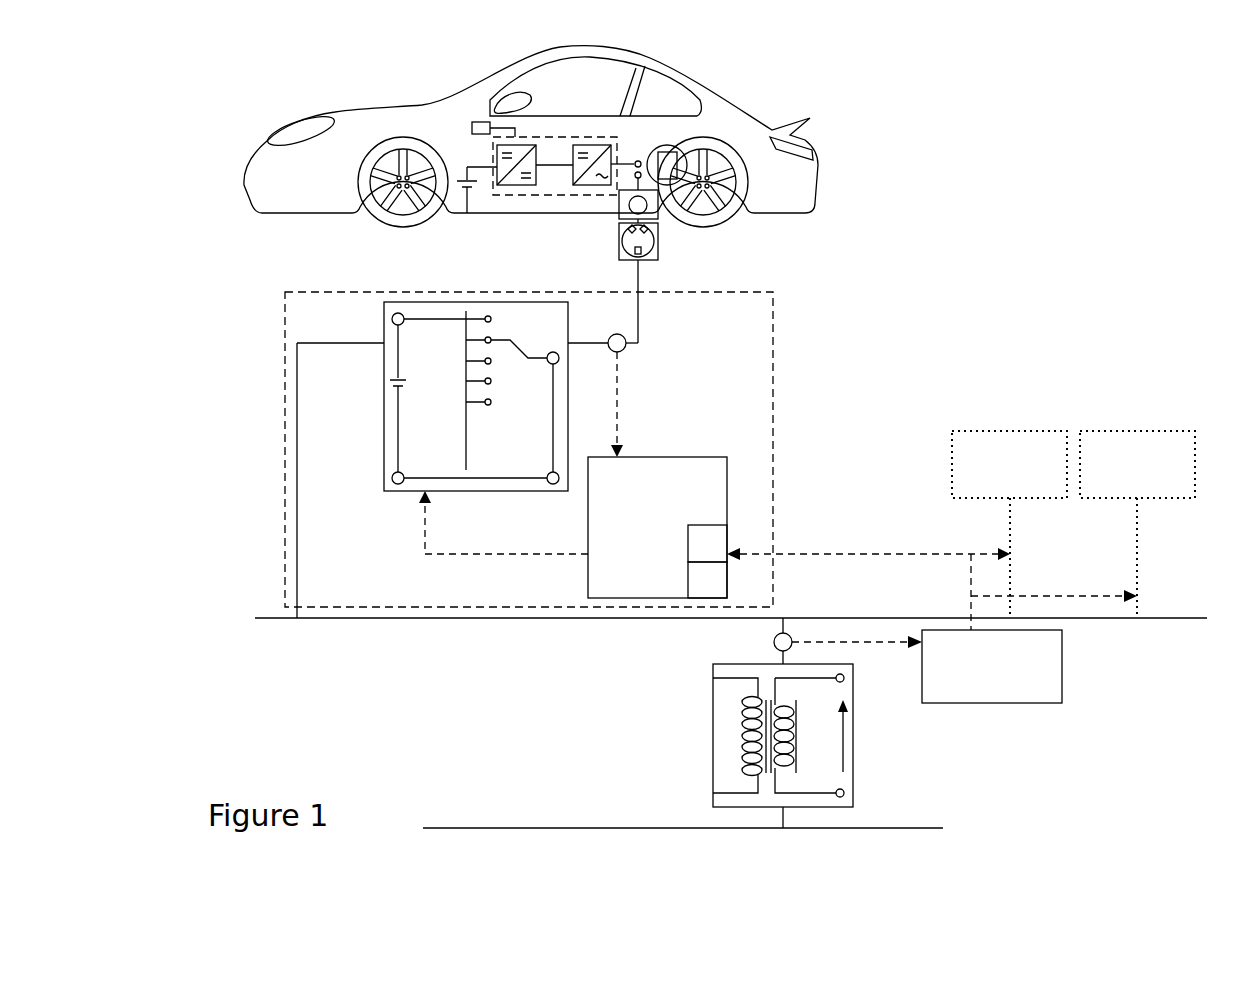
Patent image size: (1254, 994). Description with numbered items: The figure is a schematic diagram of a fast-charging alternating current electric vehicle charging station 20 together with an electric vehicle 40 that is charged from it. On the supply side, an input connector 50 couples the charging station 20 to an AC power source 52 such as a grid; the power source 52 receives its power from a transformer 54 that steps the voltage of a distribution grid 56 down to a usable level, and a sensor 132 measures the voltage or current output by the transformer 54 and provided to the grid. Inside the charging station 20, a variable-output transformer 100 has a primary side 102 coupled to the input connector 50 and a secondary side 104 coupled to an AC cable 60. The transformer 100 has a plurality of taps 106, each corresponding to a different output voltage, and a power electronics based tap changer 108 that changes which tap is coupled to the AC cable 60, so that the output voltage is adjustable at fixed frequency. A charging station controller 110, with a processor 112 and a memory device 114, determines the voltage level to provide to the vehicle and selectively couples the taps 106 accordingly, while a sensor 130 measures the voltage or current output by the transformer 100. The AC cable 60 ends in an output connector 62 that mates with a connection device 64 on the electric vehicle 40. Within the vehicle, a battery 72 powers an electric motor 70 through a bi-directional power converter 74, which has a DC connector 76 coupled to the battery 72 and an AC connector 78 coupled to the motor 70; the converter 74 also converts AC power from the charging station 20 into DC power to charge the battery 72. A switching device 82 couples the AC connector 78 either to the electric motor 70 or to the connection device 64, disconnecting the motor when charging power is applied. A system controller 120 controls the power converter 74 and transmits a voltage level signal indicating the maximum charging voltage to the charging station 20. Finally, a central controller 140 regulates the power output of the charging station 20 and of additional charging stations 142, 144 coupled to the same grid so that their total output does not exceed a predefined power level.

The electric vehicle charging station 20 is at (776, 320).
The electric vehicle 40 is at (714, 96).
The input connector 50 is at (284, 614).
The AC power source 52 is at (1166, 620).
The transformer 54 is at (713, 702).
The distribution grid 56 is at (913, 828).
The AC cable 60 is at (640, 270).
The output connector 62 is at (660, 243).
The connection device 64 is at (618, 221).
The electric motor 70 is at (668, 146).
The battery 72 is at (477, 190).
The power converter 74 is at (488, 140).
The DC connector 76 is at (490, 165).
The AC connector 78 is at (641, 157).
The switching device 82 is at (648, 138).
The variable-output transformer 100 is at (568, 311).
The primary side 102 is at (432, 442).
The secondary side 104 is at (512, 440).
The plurality of taps 106 is at (500, 316).
The power electronics based tap changer 108 is at (546, 340).
The charging station controller 110 is at (673, 455).
The processor 112 is at (700, 525).
The memory device 114 is at (688, 589).
The system controller 120 is at (477, 121).
The sensor 130 is at (628, 347).
The sensor 132 is at (793, 635).
The central controller 140 is at (1062, 665).
The electric vehicle charging station 142 is at (1010, 428).
The electric vehicle charging station 144 is at (1137, 428).